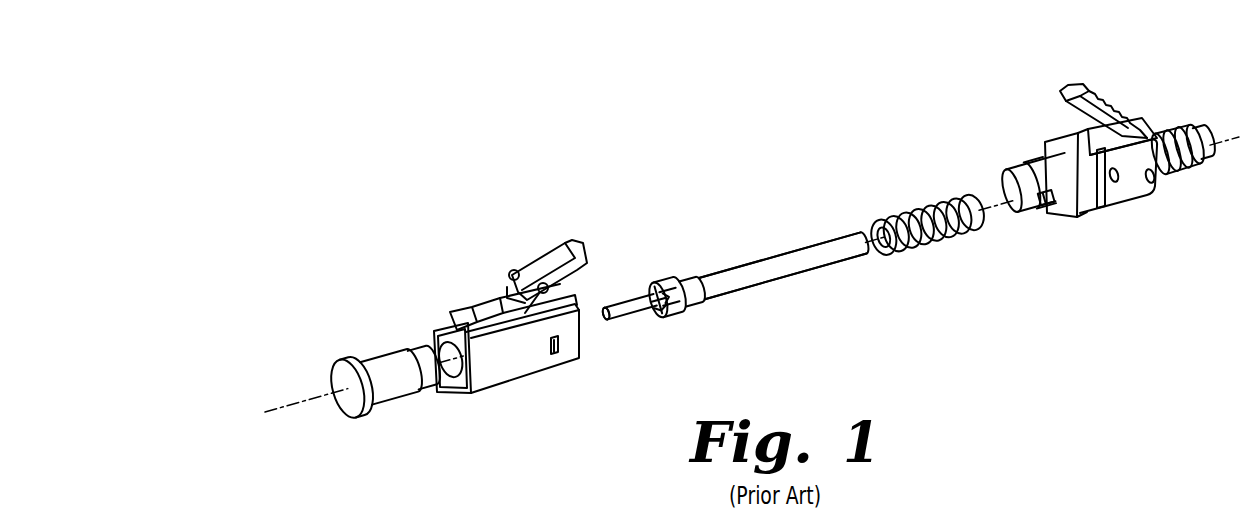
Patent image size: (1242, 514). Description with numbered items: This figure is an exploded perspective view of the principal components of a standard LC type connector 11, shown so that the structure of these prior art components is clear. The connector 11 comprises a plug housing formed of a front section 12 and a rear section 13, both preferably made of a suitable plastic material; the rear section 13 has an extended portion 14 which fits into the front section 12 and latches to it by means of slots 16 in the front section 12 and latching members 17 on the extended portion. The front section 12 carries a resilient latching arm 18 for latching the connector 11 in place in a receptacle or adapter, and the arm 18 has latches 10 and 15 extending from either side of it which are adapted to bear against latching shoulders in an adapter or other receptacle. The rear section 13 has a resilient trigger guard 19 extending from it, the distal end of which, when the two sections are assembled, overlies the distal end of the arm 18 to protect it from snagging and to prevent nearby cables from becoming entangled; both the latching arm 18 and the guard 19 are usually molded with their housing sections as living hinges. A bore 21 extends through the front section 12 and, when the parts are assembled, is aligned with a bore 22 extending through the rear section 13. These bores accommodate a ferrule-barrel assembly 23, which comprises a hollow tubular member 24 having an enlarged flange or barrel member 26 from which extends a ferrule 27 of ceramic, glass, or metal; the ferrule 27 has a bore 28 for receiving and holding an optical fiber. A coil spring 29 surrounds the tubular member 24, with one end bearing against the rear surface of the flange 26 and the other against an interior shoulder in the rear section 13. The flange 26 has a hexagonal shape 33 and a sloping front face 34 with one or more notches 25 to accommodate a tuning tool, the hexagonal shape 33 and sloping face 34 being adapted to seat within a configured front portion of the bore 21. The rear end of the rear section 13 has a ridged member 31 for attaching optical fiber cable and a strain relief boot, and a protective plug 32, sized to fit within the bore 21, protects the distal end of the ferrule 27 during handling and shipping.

The latch 10 is at (511, 271).
The LC type connector 11 is at (716, 129).
The front section 12 is at (500, 372).
The rear section 13 is at (1125, 196).
The extended portion 14 is at (1030, 160).
The latch 15 is at (549, 290).
The slot 16 is at (557, 354).
The latching member 17 is at (1045, 202).
The resilient latching arm 18 is at (551, 263).
The resilient trigger guard 19 is at (1082, 85).
The bore 21 is at (449, 382).
The bore 22 is at (1010, 183).
The ferrule-barrel assembly 23 is at (778, 283).
The hollow tubular member 24 is at (812, 245).
The notch 25 is at (655, 285).
The flange or barrel member 26 is at (672, 283).
The ferrule 27 is at (632, 300).
The bore 28 is at (606, 320).
The coil spring 29 is at (922, 198).
The ridged member 31 is at (1192, 128).
The protective plug 32 is at (342, 378).
The hexagonal shape 33 is at (681, 312).
The sloping front face 34 is at (662, 312).